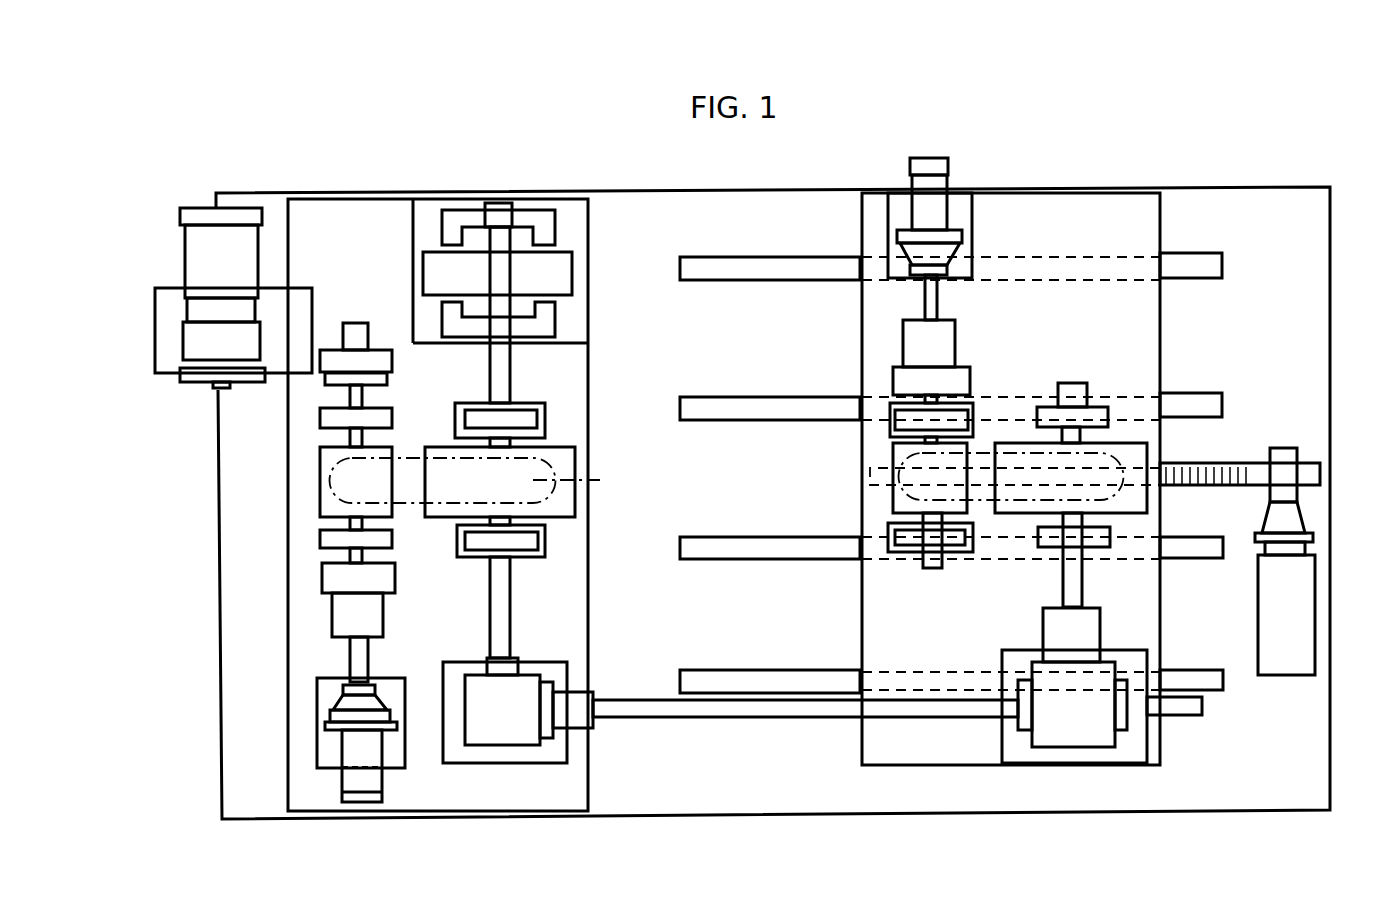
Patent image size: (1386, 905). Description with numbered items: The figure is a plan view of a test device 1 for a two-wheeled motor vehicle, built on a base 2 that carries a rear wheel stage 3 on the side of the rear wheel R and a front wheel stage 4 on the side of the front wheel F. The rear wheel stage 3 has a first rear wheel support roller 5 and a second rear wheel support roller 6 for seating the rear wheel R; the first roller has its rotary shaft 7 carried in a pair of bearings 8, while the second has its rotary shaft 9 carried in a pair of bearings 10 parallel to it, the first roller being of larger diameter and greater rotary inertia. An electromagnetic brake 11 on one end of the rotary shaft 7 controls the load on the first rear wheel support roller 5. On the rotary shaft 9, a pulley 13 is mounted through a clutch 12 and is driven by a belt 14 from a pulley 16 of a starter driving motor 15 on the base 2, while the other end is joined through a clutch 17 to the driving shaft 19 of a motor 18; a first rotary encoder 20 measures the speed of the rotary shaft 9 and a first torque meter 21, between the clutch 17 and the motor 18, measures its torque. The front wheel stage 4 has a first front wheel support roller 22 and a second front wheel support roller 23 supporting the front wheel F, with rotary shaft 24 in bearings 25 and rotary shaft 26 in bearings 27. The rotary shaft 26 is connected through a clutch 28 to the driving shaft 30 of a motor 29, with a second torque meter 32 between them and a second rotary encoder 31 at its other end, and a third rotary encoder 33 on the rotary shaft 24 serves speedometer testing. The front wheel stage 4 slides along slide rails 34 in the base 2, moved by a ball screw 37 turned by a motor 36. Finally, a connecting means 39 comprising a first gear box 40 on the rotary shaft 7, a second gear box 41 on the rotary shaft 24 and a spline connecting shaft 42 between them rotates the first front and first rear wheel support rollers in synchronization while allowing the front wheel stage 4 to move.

The test device 1 is at (1302, 141).
The base 2 is at (1218, 187).
The rear wheel stage 3 is at (370, 212).
The front wheel stage 4 is at (1068, 208).
The first rear wheel support roller 5 is at (565, 450).
The second rear wheel support roller 6 is at (340, 470).
The rotary shaft 7 is at (510, 365).
The bearings 8 is at (525, 418).
The rotary shaft 9 is at (370, 398).
The bearings 10 is at (330, 418).
The electromagnetic brake 11 is at (560, 270).
The clutch 12 is at (380, 360).
The pulley 13 is at (387, 378).
The belt 14 is at (278, 380).
The starter driving motor 15 is at (205, 248).
The pulley 16 is at (190, 385).
The clutch 17 is at (385, 580).
The motor 18 is at (370, 778).
The driving shaft 19 is at (370, 655).
The first rotary encoder 20 is at (358, 330).
The first torque meter 21 is at (345, 610).
The first front wheel support roller 22 is at (1150, 447).
The second front wheel support roller 23 is at (895, 450).
The rotary shaft 24 is at (1085, 440).
The bearings 25 is at (1090, 410).
The rotary shaft 26 is at (905, 415).
The bearings 27 is at (960, 415).
The clutch 28 is at (905, 380).
The motor 29 is at (945, 180).
The driving shaft 30 is at (940, 300).
The second rotary encoder 31 is at (935, 568).
The second torque meter 32 is at (918, 335).
The third rotary encoder 33 is at (1068, 385).
The slide rails 34 is at (735, 270).
The motor 36 is at (1300, 605).
The ball screw 37 is at (1190, 485).
The connecting means 39 is at (712, 740).
The first gear box 40 is at (520, 738).
The second gear box 41 is at (1078, 735).
The connecting shaft 42 is at (802, 718).
The rear wheel R is at (540, 478).
The front wheel F is at (875, 490).